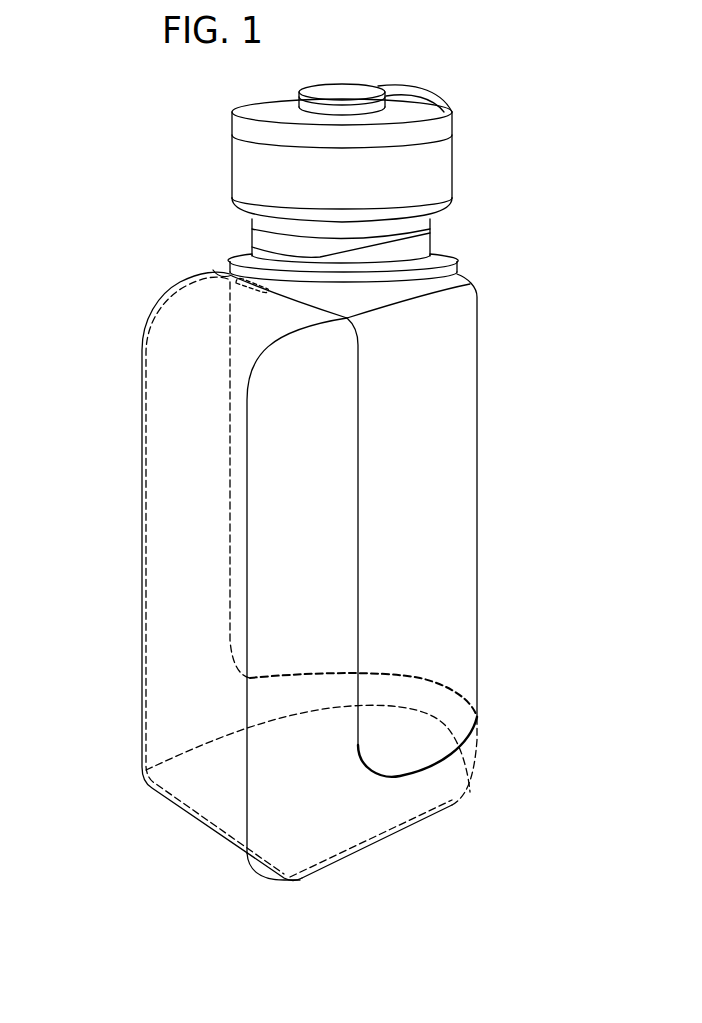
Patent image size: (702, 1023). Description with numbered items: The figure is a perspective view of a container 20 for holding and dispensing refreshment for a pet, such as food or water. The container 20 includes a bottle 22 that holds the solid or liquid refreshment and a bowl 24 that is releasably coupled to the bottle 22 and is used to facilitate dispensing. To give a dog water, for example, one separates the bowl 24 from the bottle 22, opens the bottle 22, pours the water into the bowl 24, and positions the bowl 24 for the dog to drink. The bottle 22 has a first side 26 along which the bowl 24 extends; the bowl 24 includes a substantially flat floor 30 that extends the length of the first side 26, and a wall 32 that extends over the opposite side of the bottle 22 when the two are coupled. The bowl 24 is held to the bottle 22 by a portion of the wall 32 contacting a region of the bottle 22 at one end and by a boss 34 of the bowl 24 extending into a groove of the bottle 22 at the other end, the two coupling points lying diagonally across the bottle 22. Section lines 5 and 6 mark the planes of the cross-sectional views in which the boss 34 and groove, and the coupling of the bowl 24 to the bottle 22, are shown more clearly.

The container 20 is at (206, 154).
The bottle 22 is at (512, 320).
The bowl 24 is at (111, 507).
The first side 26 is at (168, 389).
The floor 30 is at (175, 430).
The wall 32 is at (318, 560).
The boss 34 is at (232, 286).
The section line 5- 5 is at (335, 212).
The section line 6- 6 is at (237, 860).